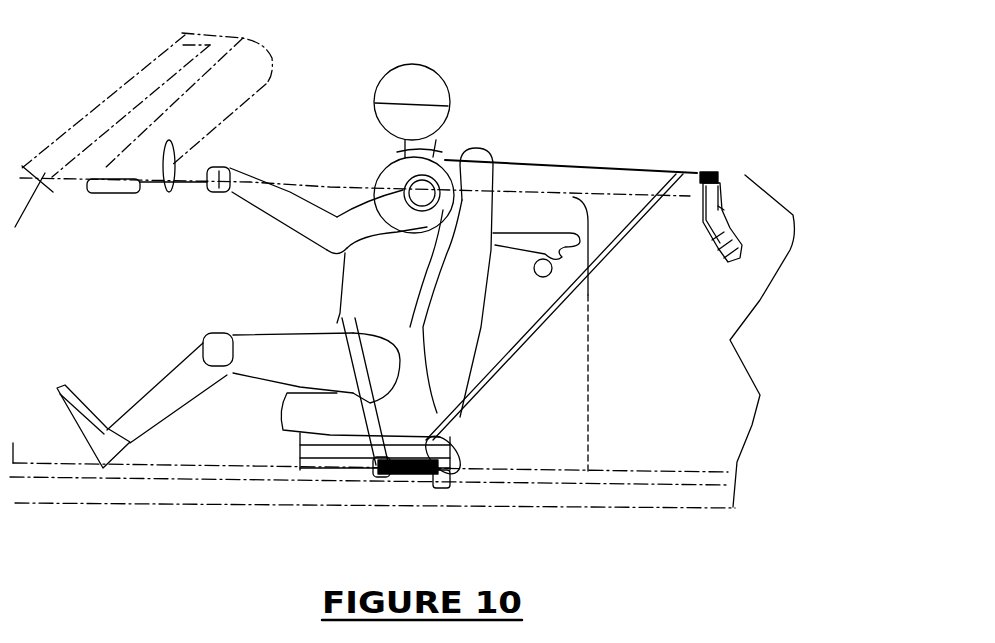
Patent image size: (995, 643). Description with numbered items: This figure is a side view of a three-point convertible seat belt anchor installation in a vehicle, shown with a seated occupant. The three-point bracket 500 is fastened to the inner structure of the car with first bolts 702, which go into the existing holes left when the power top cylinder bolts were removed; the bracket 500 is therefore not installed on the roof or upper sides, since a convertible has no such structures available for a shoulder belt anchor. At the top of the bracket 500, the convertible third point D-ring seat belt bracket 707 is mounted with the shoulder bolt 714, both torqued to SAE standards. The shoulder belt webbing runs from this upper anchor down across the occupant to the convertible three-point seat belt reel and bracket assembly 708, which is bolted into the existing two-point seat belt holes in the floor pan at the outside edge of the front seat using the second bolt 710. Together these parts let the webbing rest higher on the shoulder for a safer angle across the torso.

The three-point bracket 500 is at (720, 207).
The convertible third point D-ring seat belt bracket 707 is at (694, 170).
The shoulder bolt 714 is at (710, 172).
The first bolts 702 is at (733, 230).
The second bolt 710 is at (447, 487).
The convertible three-point seat belt reels and bracket assemblies 708 is at (450, 460).